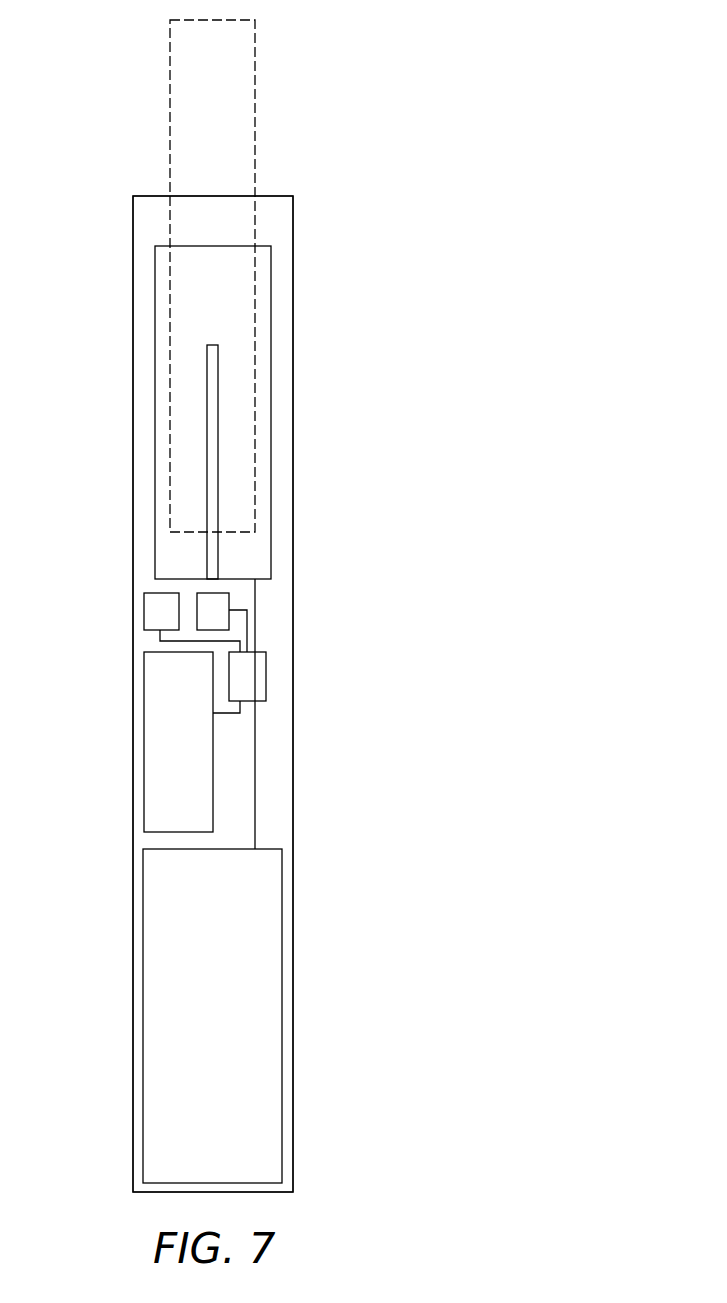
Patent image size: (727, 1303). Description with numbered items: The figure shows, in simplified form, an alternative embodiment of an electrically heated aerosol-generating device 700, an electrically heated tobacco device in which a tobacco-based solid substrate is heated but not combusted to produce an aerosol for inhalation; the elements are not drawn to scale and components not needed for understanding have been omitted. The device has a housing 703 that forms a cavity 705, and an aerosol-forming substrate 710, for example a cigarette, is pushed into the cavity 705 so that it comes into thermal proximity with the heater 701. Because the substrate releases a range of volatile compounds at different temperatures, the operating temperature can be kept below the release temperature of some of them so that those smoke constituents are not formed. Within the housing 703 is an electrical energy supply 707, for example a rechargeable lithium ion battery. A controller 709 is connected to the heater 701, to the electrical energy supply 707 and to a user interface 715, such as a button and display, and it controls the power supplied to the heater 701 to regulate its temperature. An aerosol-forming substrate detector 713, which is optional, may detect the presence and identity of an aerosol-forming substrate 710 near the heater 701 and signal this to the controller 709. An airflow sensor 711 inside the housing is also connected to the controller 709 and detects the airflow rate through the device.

The electrically heated aerosol-generating device 700 is at (128, 126).
The housing 703 is at (293, 226).
The aerosol-forming substrate 710 is at (255, 46).
The cavity 705 is at (271, 572).
The heater 701 is at (207, 347).
The airflow sensor 711 is at (207, 593).
The aerosol-forming substrate detector 713 is at (144, 604).
The controller 709 is at (266, 668).
The user interface 715 is at (143, 663).
The electrical energy supply 707 is at (282, 863).